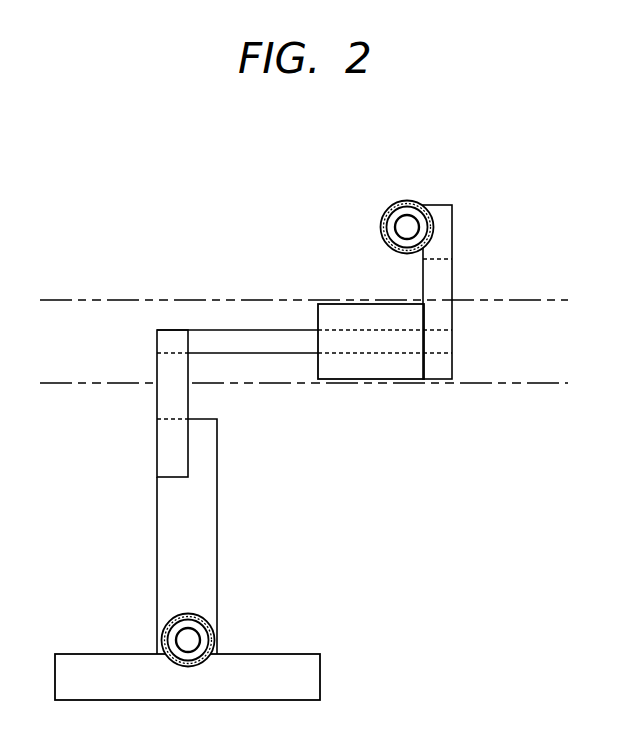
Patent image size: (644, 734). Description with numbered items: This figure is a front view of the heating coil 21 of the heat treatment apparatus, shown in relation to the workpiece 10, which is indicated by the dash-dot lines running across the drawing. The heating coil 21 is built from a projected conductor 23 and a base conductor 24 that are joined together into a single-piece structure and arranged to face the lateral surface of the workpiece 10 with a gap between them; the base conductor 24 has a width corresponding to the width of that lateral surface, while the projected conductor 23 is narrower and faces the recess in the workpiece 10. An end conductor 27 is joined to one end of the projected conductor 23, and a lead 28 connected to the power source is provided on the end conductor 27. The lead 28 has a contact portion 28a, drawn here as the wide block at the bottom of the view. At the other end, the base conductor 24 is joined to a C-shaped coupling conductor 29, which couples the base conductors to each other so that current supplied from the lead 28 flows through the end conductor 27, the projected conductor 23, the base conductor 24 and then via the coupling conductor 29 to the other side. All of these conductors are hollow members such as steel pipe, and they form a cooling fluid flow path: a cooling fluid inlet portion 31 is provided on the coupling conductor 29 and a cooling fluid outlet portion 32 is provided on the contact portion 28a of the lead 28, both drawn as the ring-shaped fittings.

The workpiece 10 is at (490, 384).
The heating coil 21 is at (238, 210).
The projected conductor 23 is at (262, 354).
The base conductor 24 is at (378, 380).
The end conductor 27 is at (157, 396).
The lead 28 is at (157, 527).
The contact portion 28a is at (82, 654).
The coupling conductor 29 is at (452, 288).
The cooling fluid inlet portion 31 is at (407, 200).
The cooling fluid outlet portion 32 is at (201, 616).